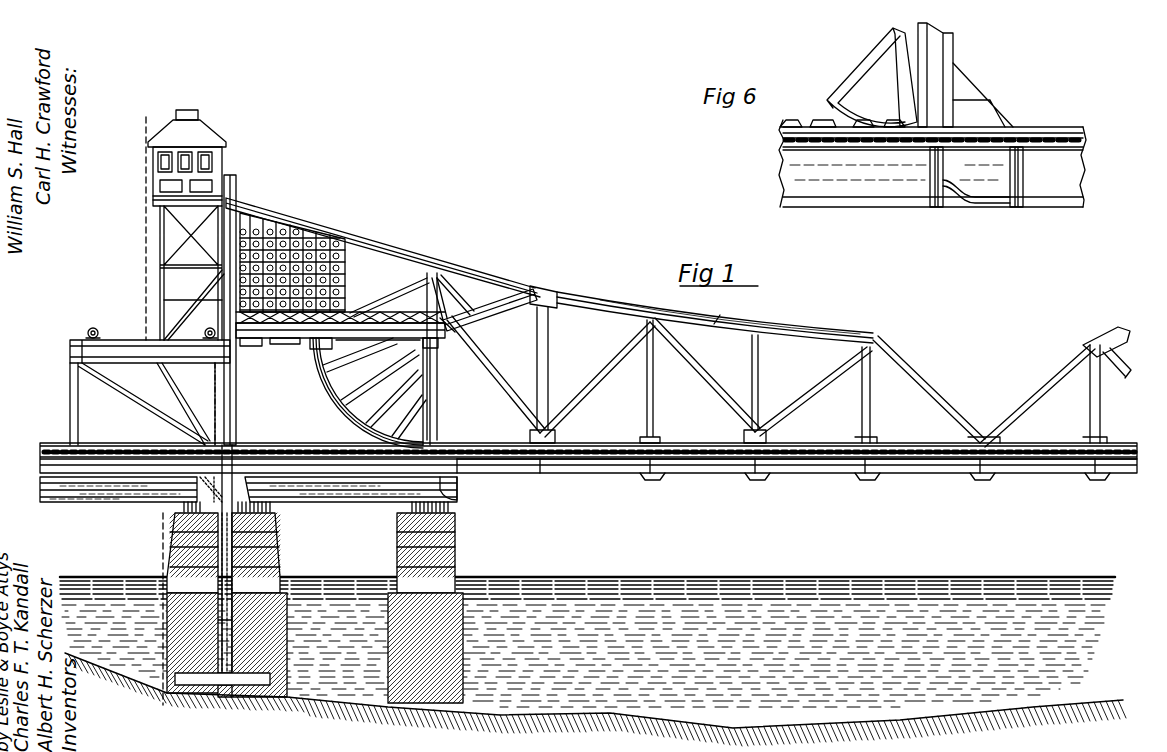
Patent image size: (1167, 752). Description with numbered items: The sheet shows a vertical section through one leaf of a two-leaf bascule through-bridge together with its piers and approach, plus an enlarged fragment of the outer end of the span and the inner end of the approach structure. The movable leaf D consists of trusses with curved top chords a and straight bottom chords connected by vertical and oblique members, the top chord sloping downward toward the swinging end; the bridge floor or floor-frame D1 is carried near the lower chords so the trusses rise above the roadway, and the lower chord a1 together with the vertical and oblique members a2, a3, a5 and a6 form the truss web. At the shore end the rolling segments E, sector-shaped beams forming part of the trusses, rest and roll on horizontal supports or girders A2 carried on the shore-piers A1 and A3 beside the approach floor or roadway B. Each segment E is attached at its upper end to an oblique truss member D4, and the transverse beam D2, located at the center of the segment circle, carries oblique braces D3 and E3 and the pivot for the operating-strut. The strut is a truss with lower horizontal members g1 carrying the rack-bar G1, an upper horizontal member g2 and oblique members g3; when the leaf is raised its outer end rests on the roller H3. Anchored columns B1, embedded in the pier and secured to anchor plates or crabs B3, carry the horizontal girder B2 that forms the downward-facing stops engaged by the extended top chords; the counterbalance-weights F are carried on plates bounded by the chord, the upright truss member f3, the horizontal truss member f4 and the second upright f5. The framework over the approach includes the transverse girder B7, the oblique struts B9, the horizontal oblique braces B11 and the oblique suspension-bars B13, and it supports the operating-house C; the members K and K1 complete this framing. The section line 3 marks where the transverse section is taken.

In FIG. 1, the section line 3 3 is at (167, 709).
In FIG. 1, the operating-house C is at (205, 137).
In FIG. 1, the horizontal beam or girder B2 is at (236, 178).
In FIG. 1, the oblique suspension-bars B13 is at (214, 247).
In FIG. 1, the upright truss member f3 is at (204, 283).
In FIG. 1, the cross beam K1 is at (186, 303).
In FIG. 1, the anchored columns B1 is at (236, 405).
In FIG. 1, the horizontally-arranged oblique braces B11 is at (122, 345).
In FIG. 1, the transverse horizontal girder B7 is at (74, 339).
In FIG. 1, the roller H3 is at (114, 334).
In FIG. 1, the oblique struts B9 is at (132, 372).
In FIG. 1, the brace K is at (184, 370).
In FIG. 1, the counterbalance-weights F is at (275, 240).
In FIG. 1, the second upright f5 is at (358, 248).
In FIG. 1, the oblique braces D3 is at (537, 364).
In FIG. 1, the movable leaf or span D is at (640, 310).
In FIG. 6, the movable leaf or span D is at (980, 92).
In FIG. 1, the notches or recesses a is at (1118, 331).
In FIG. 1, the vertical post a2 is at (437, 394).
In FIG. 1, the diagonal member a3 is at (498, 390).
In FIG. 1, the strut a5 is at (462, 311).
In FIG. 1, the junction a6 is at (448, 332).
In FIG. 1, the oblique members g3 is at (432, 273).
In FIG. 1, the upper horizontal member g2 is at (338, 313).
In FIG. 1, the lower horizontal members g1 is at (305, 343).
In FIG. 1, the rack-bar G1 is at (280, 345).
In FIG. 1, the horizontal truss member f4 is at (257, 346).
In FIG. 1, the rolling segments E is at (338, 400).
In FIG. 6, the rolling segments E is at (862, 62).
In FIG. 1, the oblique truss members D4 is at (318, 350).
In FIG. 1, the oblique braces E3 is at (392, 345).
In FIG. 1, the horizontal beam D2 is at (422, 352).
In FIG. 1, the deck stringer a1 is at (680, 449).
In FIG. 1, the bridge floor or floor-frame D1 is at (820, 466).
In FIG. 6, the bridge floor or floor-frame D1 is at (1030, 204).
In FIG. 1, the approach floor or roadway B is at (92, 445).
In FIG. 6, the approach floor or roadway B is at (784, 160).
In FIG. 1, the horizontal supports or girders A2 is at (326, 506).
In FIG. 1, the shore-pier A1 is at (206, 608).
In FIG. 1, the anchor plates or crabs B3 is at (272, 671).
In FIG. 1, the pier A3 is at (425, 608).